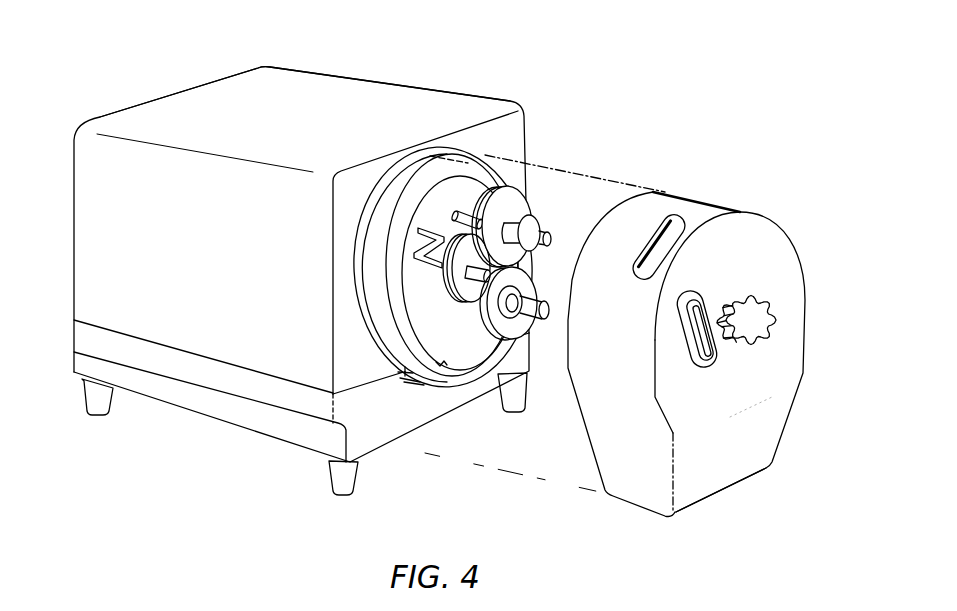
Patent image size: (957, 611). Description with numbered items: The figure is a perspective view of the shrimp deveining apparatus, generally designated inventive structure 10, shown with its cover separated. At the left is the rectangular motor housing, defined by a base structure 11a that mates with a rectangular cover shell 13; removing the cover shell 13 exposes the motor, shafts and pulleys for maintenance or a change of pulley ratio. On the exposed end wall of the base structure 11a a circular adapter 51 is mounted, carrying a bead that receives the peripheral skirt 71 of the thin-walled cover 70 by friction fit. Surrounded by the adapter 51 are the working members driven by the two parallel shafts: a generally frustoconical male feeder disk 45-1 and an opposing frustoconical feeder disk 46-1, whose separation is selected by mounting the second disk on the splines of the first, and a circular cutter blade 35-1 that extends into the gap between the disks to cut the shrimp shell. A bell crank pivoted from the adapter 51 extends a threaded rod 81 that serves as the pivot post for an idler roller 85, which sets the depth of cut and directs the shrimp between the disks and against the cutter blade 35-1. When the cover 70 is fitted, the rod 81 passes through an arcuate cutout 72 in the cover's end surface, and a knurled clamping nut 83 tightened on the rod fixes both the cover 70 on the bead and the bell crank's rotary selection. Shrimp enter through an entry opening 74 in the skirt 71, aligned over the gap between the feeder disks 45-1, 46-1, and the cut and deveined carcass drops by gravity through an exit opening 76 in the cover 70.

The inventive structure 10 is at (91, 113).
The rectangular cover shell 13 is at (350, 84).
The base structure 11a is at (210, 383).
The circular adapter 51 is at (408, 371).
The male feeder disk 45-1 is at (491, 188).
The opposing frustoconical feeder disk 46-1 is at (528, 212).
The idler roller 85 is at (460, 280).
The threaded rod 81 is at (470, 278).
The circular cutter blade 35-1 is at (540, 330).
The thin-walled cover 70 is at (717, 352).
The peripheral skirt 71 is at (707, 208).
The entry opening 74 is at (676, 213).
The arcuate cutout 72 is at (706, 304).
The knurled clamping nut 83 is at (772, 311).
The exit opening 76 is at (717, 493).